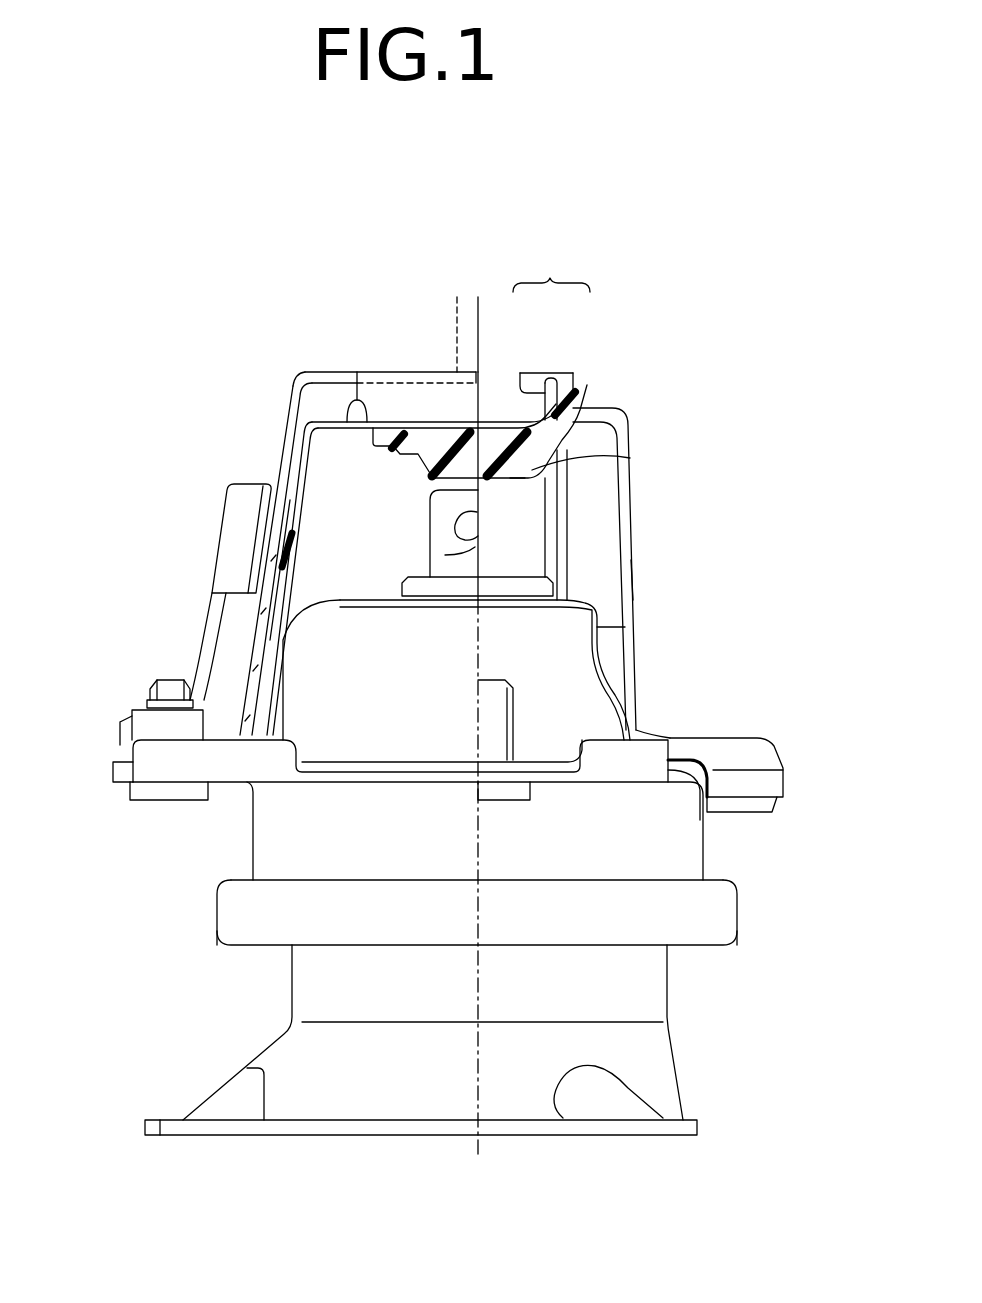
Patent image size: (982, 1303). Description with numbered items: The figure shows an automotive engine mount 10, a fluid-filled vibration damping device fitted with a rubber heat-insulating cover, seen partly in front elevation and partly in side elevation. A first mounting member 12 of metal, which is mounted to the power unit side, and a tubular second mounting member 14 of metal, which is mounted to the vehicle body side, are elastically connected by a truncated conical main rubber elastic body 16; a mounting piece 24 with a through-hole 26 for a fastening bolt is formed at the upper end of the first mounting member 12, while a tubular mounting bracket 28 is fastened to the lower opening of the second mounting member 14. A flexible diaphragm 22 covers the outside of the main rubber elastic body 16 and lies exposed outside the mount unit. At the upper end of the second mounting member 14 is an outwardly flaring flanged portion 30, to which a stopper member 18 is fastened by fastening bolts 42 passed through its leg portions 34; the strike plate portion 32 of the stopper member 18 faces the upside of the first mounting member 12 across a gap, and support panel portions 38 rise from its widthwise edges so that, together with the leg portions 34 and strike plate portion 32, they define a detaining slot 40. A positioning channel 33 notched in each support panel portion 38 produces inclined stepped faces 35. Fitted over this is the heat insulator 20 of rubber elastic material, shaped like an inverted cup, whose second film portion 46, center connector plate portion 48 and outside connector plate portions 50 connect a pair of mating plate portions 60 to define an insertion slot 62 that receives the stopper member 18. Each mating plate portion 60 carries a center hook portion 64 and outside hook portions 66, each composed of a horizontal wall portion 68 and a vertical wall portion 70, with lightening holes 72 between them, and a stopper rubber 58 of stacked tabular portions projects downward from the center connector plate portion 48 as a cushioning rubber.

The engine mount 10 is at (172, 303).
The first mounting member 12 is at (492, 585).
The second mounting member 14 is at (307, 829).
The main rubber elastic body 16 is at (525, 600).
The stopper member 18 is at (283, 432).
The heat insulator 20 is at (635, 428).
The diaphragm 22 is at (547, 687).
The mounting piece 24 is at (447, 520).
The through-hole 26 is at (445, 555).
The mounting bracket 28 is at (356, 1075).
The flanged portion 30 is at (127, 746).
The strike plate portion 32 is at (496, 425).
The positioning channel 33 is at (460, 321).
The leg portions 34 is at (262, 624).
The stepped faces 35 is at (356, 372).
The support panel portions 38 is at (222, 663).
The detaining slot 40 is at (352, 420).
The fastening bolts 42 is at (178, 700).
The second film portion 46 is at (638, 586).
The center connector plate portion 48 is at (446, 437).
The outside connector plate portions 50 is at (283, 515).
The stopper rubber 58 is at (630, 458).
The mating plate portions 60 is at (568, 417).
The insertion slot 62 is at (560, 410).
The center hook portion 64 is at (379, 372).
The outside hook portions 66 is at (210, 555).
The horizontal wall portion 68 is at (551, 387).
The vertical wall portion 70 is at (418, 392).
The lightening holes 72 is at (287, 478).